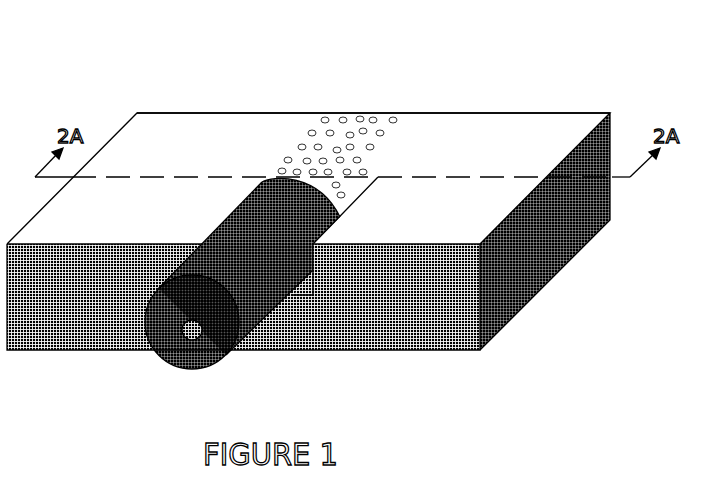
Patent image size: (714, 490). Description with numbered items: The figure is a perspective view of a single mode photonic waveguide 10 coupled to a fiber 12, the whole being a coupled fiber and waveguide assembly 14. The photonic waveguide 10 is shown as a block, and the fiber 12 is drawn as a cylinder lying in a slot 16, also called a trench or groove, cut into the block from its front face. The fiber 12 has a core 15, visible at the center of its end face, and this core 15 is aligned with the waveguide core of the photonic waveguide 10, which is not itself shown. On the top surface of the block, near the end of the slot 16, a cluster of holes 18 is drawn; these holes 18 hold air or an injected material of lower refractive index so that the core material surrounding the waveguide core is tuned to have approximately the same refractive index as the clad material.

The photonic waveguide 10 is at (258, 123).
The fiber 12 is at (238, 353).
The coupled fiber and waveguide assembly 14 is at (419, 83).
The core 15 is at (185, 339).
The slot 16 is at (294, 297).
The holes 18 is at (343, 117).